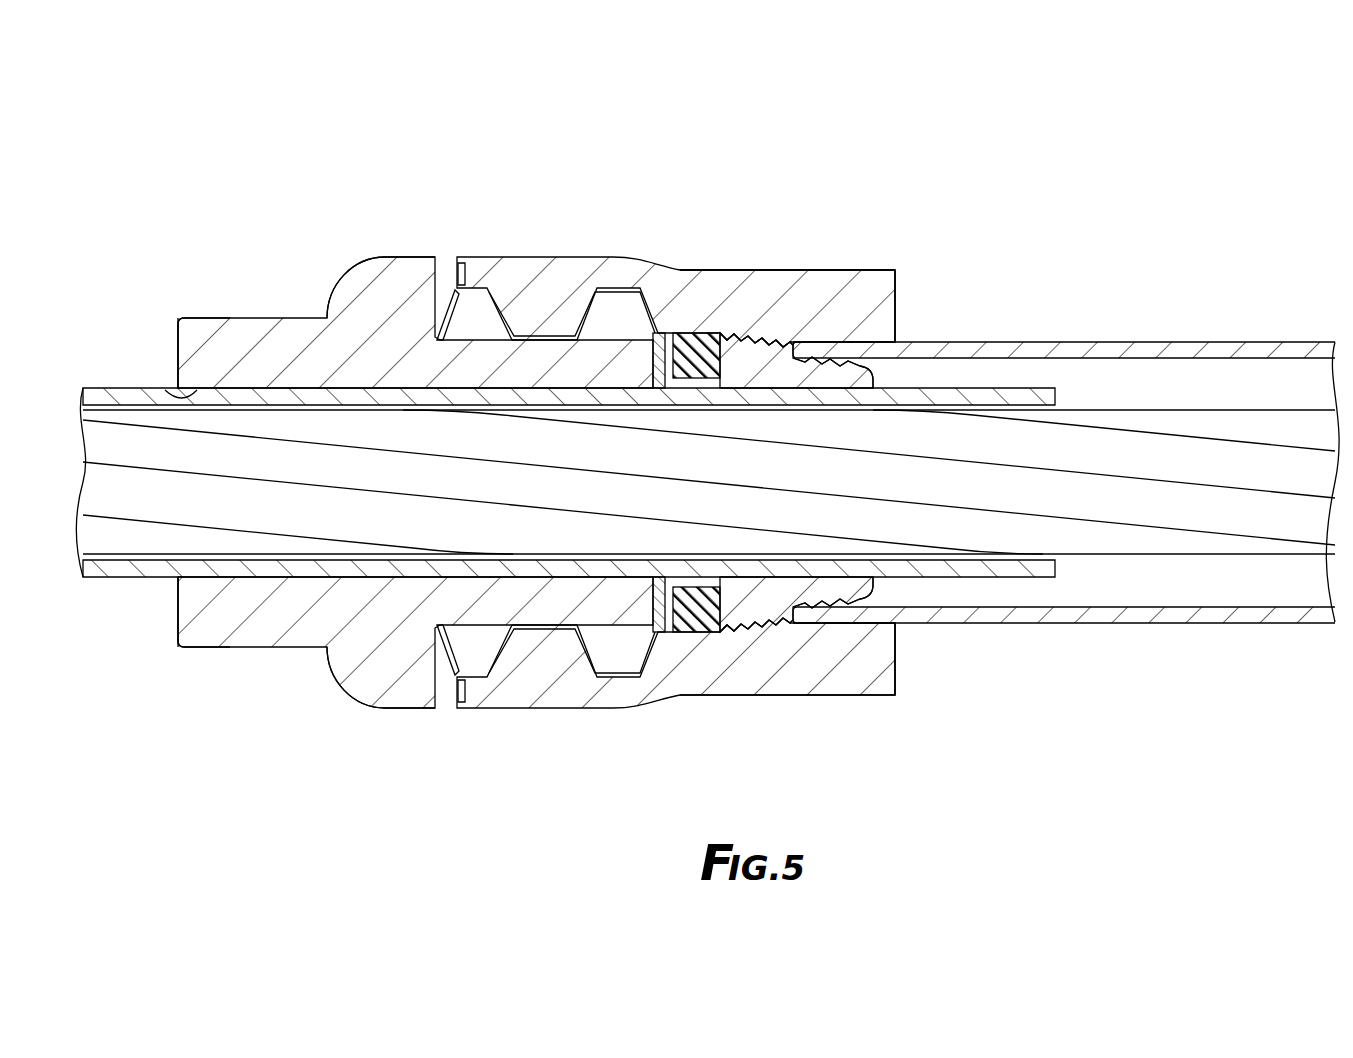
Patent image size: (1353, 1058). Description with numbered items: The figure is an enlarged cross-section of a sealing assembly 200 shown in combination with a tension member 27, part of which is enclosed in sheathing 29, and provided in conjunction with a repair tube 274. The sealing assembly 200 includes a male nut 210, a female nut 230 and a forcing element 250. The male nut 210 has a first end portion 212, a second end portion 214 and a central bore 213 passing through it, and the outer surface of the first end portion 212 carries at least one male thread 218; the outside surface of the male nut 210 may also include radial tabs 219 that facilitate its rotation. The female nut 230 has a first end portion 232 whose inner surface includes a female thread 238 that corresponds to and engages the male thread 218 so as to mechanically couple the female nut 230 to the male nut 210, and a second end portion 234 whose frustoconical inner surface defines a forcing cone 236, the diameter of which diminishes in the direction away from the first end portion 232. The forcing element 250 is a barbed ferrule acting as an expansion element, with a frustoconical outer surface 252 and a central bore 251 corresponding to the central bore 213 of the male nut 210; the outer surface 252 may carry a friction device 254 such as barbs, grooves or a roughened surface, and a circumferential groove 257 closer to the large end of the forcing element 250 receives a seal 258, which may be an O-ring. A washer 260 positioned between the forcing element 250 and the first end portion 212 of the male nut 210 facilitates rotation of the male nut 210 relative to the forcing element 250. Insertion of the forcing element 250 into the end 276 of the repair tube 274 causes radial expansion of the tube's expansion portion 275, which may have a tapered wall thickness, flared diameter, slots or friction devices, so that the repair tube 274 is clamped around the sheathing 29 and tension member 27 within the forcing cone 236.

The sealing assembly 200 is at (1207, 145).
The male nut 210 is at (263, 312).
The first end portion 212 is at (600, 633).
The central bore 213 is at (168, 392).
The second end portion 214 is at (205, 318).
The male thread 218 is at (457, 290).
The radial tabs 219 is at (362, 257).
The female nut 230 is at (862, 262).
The first end portion 232 is at (530, 257).
The second end portion 234 is at (797, 268).
The forcing cone 236 is at (777, 350).
The female thread 238 is at (615, 293).
The forcing element 250 is at (870, 335).
The central bore 251 is at (855, 372).
The frustoconical outer surface 252 is at (860, 352).
The friction device 254 is at (734, 340).
The circumferential groove 257 is at (688, 333).
The seal 258 is at (686, 633).
The washer 260 is at (656, 633).
The repair tube 274 is at (1195, 340).
The expansion portion 275 is at (767, 633).
The end 276 is at (858, 620).
The tension member 27 is at (1182, 555).
The sheathing 29 is at (145, 577).